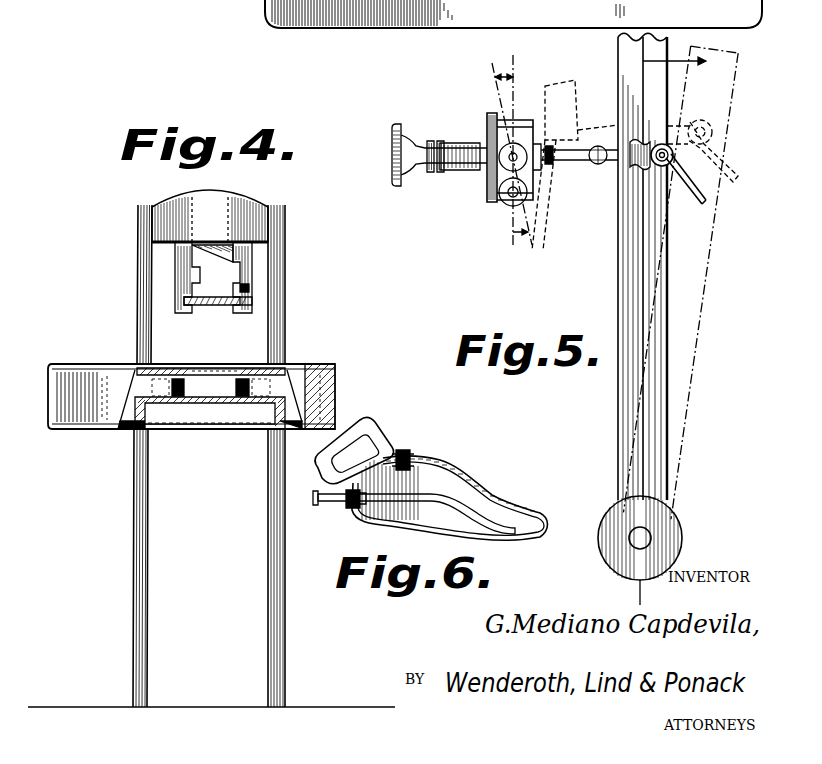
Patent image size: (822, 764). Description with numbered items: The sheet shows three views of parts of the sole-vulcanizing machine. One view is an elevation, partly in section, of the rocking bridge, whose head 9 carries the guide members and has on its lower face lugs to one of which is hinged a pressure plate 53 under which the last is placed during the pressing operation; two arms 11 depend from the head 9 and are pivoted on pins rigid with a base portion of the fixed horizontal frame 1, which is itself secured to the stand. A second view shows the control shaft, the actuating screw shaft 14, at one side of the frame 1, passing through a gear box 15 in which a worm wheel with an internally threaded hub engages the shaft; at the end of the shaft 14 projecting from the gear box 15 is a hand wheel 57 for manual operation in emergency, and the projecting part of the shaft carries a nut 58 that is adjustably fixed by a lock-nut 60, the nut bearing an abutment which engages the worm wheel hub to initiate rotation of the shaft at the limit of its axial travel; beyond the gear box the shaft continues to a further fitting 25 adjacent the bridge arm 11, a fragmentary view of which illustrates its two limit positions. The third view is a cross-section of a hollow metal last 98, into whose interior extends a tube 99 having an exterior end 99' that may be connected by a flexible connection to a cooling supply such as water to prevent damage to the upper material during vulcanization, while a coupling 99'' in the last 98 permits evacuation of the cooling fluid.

In FIG. 4, the fixed horizontal frame 1 is at (113, 367).
In FIG. 5, the fixed horizontal frame 1 is at (563, 84).
In FIG. 4, the head of rocking bridge 9 is at (222, 200).
In FIG. 4, the depending arms 11 is at (285, 343).
In FIG. 5, the depending arms 11 is at (625, 270).
In FIG. 5, the actuating screw shaft 14 is at (469, 146).
In FIG. 5, the gear box 15 is at (508, 140).
In FIG. 5, the nut 25 is at (598, 165).
In FIG. 4, the pressure plate 53 is at (217, 306).
In FIG. 5, the hand wheel 57 is at (398, 128).
In FIG. 5, the nut 58 is at (441, 174).
In FIG. 5, the lock-nut 60 is at (430, 174).
In FIG. 6, the last 98 is at (488, 492).
In FIG. 6, the tube 99 is at (414, 518).
In FIG. 6, the exterior end of tube 99' is at (338, 517).
In FIG. 6, the coupling 99'' is at (422, 446).